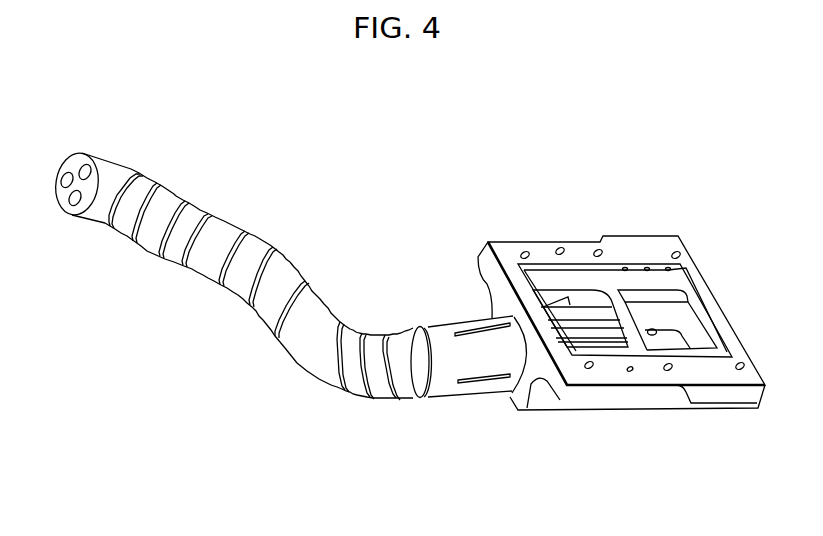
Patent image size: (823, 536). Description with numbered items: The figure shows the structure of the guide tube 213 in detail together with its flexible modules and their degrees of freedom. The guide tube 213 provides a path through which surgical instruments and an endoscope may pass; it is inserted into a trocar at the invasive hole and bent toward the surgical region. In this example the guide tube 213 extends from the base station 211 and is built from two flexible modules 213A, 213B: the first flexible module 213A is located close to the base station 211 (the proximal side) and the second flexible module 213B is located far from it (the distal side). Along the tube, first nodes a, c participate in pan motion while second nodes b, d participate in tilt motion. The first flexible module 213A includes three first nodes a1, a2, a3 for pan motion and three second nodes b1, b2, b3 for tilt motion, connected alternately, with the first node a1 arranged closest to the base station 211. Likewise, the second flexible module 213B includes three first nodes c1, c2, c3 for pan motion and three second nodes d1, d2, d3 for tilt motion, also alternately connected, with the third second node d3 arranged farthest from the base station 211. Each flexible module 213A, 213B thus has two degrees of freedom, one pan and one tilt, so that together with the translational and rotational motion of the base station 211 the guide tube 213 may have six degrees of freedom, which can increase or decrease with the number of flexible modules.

The base station 211 is at (625, 248).
The guide tube 213 is at (271, 313).
The first flexible module 213A is at (297, 373).
The second flexible module 213B is at (165, 244).
The first nodes a is at (359, 317).
The first node a1 is at (406, 314).
The first node a2 is at (353, 338).
The first node a3 is at (312, 302).
The second nodes b is at (307, 351).
The second node b1 is at (364, 418).
The second node b2 is at (292, 355).
The second node b3 is at (250, 310).
The first nodes c is at (215, 190).
The first node c1 is at (268, 220).
The first node c2 is at (197, 217).
The first node c3 is at (145, 182).
The second nodes d is at (148, 254).
The second node d1 is at (201, 292).
The second node d2 is at (138, 240).
The second node d3 is at (93, 212).